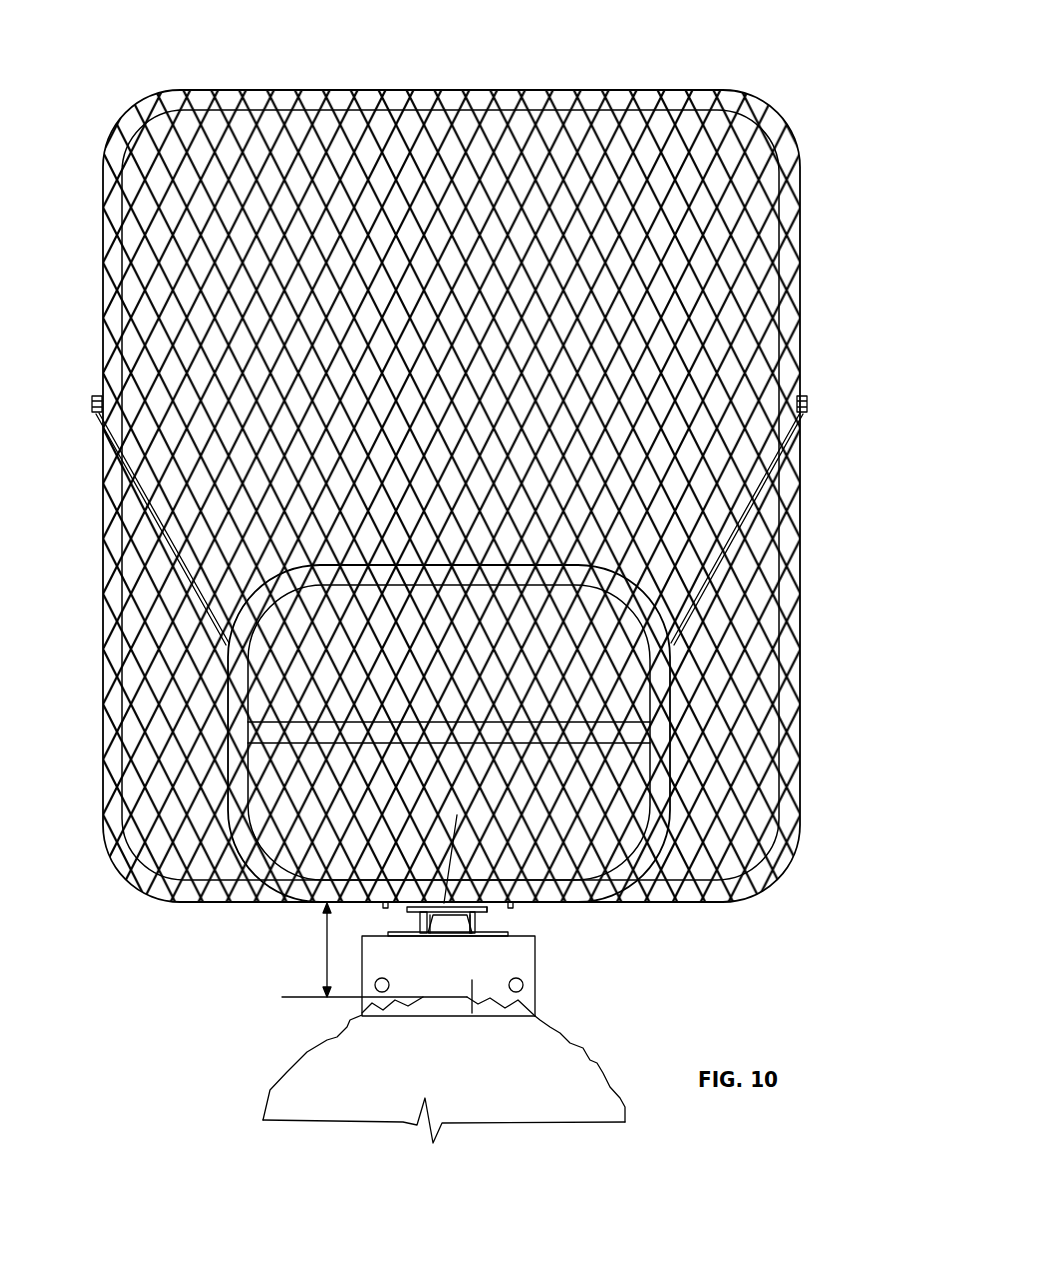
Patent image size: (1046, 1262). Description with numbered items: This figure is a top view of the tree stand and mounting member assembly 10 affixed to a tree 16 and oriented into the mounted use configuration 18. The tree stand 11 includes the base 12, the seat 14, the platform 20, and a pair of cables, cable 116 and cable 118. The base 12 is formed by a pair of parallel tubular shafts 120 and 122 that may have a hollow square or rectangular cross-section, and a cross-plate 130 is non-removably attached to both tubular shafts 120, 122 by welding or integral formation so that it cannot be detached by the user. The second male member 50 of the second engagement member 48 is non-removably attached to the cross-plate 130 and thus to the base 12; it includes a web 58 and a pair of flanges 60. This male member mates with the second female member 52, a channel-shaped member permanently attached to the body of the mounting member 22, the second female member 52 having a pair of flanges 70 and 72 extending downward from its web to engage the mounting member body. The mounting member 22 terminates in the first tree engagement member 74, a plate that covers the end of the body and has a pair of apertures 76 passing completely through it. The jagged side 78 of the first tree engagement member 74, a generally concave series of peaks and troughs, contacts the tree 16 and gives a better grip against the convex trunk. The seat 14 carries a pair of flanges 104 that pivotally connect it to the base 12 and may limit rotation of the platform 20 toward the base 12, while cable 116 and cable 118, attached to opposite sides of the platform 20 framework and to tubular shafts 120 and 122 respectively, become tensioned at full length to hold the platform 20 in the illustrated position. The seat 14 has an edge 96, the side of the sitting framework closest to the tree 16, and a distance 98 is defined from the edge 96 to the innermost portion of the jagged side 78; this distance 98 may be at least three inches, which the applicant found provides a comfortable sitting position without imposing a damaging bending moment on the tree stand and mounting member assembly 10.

The tree stand and mounting member assembly 10 is at (66, 86).
The tree stand 11 is at (813, 692).
The base 12 is at (511, 903).
The seat 14 is at (665, 787).
The tree 16 is at (562, 1033).
The mounted use configuration 18 is at (820, 104).
The platform 20 is at (722, 311).
The mounting member 22 is at (472, 1013).
The second engagement member 48 is at (402, 920).
The second male member 50 is at (470, 905).
The second female member 52 is at (477, 925).
The web 58 is at (457, 814).
The flanges 60 is at (424, 903).
The flange 70 is at (501, 937).
The flange 72 is at (417, 936).
The first tree engagement member 74 is at (452, 969).
The apertures 76 is at (523, 986).
The jagged side 78 is at (449, 998).
The edge 96 is at (558, 905).
The distance 98 is at (320, 977).
The flanges 104 is at (346, 903).
The cable 116 is at (134, 518).
The cable 118 is at (720, 567).
The tubular shaft 120 is at (410, 905).
The tubular shaft 122 is at (490, 905).
The cross-plate 130 is at (383, 907).